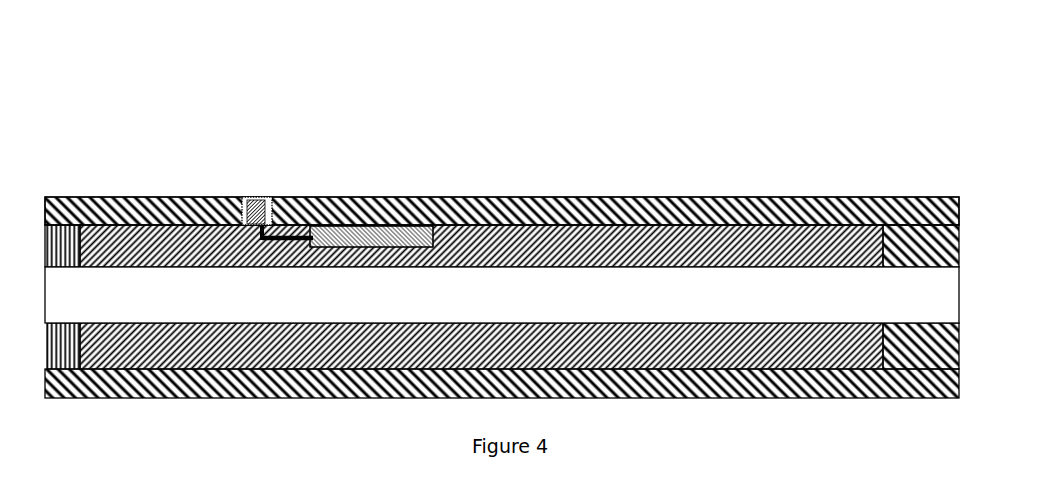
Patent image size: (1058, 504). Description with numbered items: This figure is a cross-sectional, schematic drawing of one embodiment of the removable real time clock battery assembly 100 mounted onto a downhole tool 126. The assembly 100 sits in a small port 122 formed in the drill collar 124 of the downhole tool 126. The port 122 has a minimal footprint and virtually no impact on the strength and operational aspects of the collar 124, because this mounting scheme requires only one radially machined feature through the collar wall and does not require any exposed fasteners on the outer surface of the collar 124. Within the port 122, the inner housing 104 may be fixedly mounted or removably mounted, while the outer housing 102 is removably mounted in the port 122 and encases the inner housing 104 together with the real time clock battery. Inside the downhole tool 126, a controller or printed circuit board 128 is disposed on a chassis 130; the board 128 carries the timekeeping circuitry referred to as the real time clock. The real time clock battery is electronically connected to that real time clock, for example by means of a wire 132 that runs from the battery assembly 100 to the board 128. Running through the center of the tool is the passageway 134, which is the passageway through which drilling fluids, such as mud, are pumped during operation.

The removable real time clock battery assembly 100 is at (237, 168).
The outer housing 102 is at (230, 197).
The inner housing 104 is at (258, 197).
The port 122 is at (283, 197).
The drill collar 124 is at (703, 208).
The downhole tool 126 is at (833, 148).
The printed circuit board 128 is at (410, 238).
The chassis 130 is at (553, 225).
The wire 132 is at (286, 240).
The passageway 134 is at (644, 303).